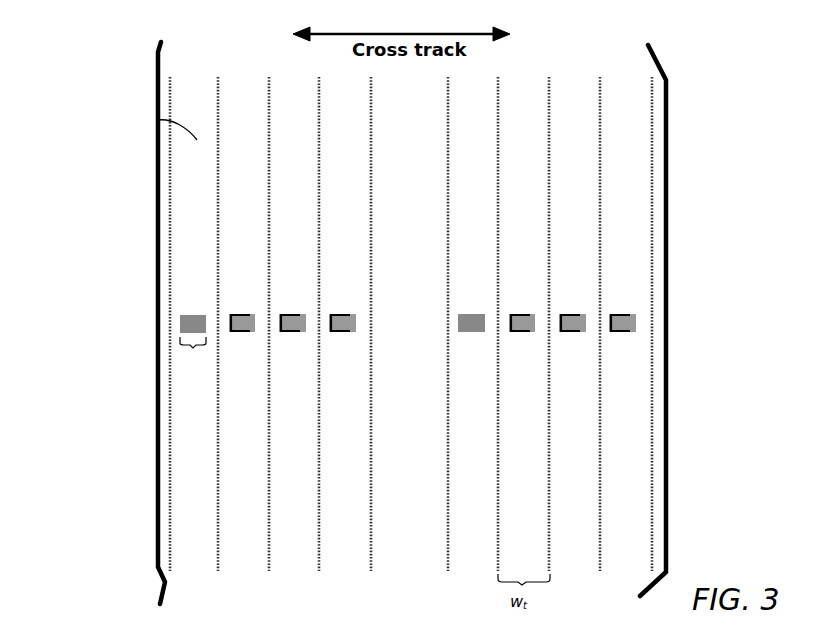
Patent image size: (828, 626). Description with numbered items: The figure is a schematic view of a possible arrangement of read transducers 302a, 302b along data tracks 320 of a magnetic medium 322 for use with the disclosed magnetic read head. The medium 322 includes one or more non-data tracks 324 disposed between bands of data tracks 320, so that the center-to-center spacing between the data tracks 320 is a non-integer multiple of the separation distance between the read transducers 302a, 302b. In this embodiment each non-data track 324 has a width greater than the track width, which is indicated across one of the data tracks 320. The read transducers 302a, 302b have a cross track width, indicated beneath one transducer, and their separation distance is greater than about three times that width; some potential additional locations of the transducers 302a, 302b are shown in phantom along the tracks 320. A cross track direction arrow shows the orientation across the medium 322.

The read transducer 302a is at (190, 313).
The read transducer 302b is at (484, 328).
The data track 320 is at (201, 146).
The magnetic medium 322 is at (138, 44).
The non-data track 324 is at (416, 546).